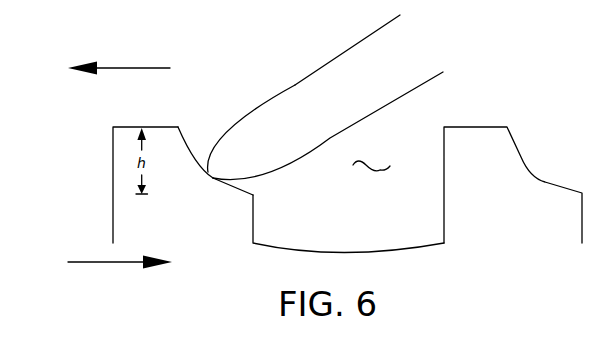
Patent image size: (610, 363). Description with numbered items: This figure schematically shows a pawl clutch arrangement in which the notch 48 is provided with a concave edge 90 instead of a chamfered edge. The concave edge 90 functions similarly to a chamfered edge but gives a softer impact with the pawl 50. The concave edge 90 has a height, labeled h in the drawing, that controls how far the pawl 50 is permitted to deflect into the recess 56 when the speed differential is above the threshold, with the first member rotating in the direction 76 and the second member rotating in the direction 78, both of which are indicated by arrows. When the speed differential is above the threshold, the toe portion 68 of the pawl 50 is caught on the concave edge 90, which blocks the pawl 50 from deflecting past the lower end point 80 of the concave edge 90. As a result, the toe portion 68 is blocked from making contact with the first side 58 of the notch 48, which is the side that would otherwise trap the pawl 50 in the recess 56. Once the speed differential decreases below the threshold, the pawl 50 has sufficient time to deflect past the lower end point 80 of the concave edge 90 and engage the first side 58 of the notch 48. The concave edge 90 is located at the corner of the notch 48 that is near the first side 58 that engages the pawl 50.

The notch 48 is at (113, 180).
The pawl 50 is at (335, 75).
The recess 56 is at (373, 167).
The first side 58 is at (255, 222).
The toe portion 68 is at (268, 122).
The direction 76 is at (118, 262).
The direction 78 is at (118, 66).
The lower end point 80 is at (250, 197).
The concave edge 90 is at (190, 147).